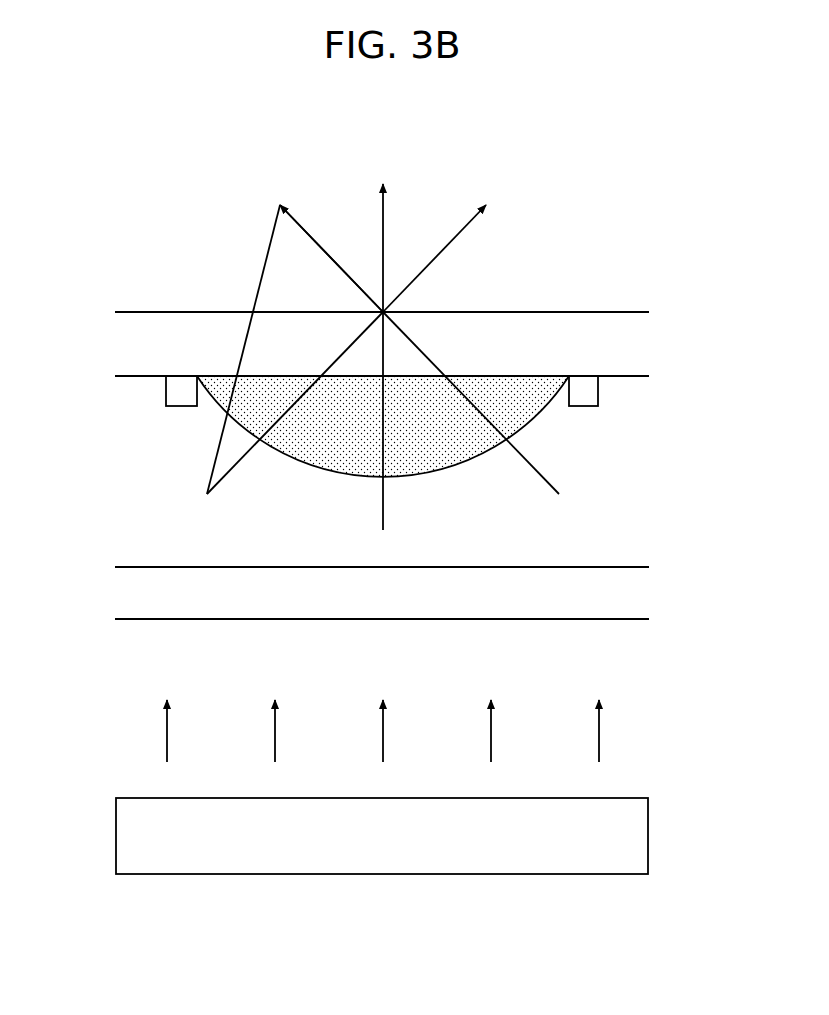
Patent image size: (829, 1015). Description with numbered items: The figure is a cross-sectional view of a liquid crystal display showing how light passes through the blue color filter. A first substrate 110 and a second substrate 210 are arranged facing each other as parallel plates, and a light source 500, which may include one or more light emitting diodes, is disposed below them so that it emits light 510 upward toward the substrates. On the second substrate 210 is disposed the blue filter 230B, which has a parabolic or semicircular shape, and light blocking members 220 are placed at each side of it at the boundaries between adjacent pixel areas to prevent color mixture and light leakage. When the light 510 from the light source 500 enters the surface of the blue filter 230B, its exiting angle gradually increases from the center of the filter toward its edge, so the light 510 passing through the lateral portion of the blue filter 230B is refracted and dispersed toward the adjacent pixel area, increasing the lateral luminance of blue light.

The first substrate 110 is at (637, 595).
The second substrate 210 is at (637, 352).
The light blocking members 220 is at (168, 390).
The blue filter 230B is at (426, 464).
The light source 500 is at (649, 835).
The light 510 is at (600, 730).